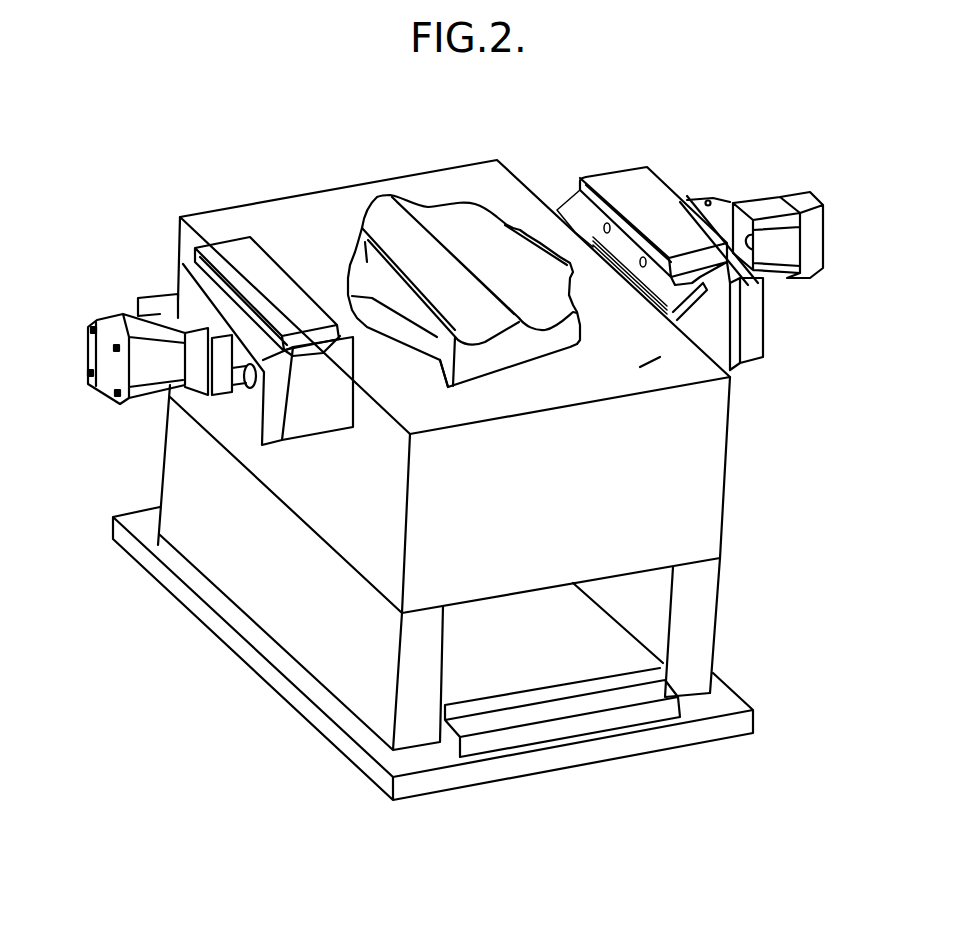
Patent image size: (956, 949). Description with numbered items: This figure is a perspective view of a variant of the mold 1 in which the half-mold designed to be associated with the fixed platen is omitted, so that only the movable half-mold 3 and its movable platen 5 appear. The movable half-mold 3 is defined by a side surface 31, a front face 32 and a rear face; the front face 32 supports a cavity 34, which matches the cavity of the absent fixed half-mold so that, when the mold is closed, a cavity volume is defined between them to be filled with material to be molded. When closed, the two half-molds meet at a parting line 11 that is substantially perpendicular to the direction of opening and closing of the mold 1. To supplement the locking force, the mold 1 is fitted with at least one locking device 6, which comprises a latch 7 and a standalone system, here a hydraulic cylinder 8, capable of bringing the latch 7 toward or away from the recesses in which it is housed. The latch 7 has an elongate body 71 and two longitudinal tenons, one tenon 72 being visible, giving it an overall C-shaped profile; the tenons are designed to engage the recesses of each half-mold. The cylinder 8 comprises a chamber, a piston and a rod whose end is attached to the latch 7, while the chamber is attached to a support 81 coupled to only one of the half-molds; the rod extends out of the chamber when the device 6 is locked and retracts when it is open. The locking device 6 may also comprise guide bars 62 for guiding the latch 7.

The mold 1 is at (613, 767).
The movable half-mold 3 is at (735, 433).
The movable platen 5 is at (505, 767).
The locking device 6 is at (162, 397).
The latch 7 is at (243, 245).
The hydraulic cylinder 8 is at (142, 333).
The parting line 11 is at (660, 357).
The side surface 31 is at (678, 508).
The front face 32 is at (310, 230).
The cavity 34 is at (450, 222).
The guide bars 62 is at (207, 387).
The elongate body 71 is at (562, 202).
The longitudinal tenon 72 is at (590, 177).
The support 81 is at (322, 405).